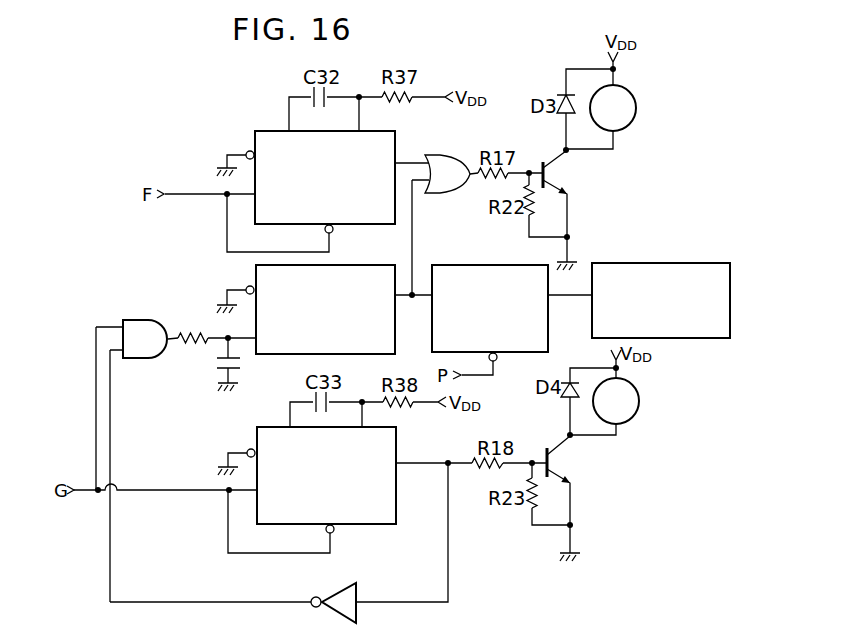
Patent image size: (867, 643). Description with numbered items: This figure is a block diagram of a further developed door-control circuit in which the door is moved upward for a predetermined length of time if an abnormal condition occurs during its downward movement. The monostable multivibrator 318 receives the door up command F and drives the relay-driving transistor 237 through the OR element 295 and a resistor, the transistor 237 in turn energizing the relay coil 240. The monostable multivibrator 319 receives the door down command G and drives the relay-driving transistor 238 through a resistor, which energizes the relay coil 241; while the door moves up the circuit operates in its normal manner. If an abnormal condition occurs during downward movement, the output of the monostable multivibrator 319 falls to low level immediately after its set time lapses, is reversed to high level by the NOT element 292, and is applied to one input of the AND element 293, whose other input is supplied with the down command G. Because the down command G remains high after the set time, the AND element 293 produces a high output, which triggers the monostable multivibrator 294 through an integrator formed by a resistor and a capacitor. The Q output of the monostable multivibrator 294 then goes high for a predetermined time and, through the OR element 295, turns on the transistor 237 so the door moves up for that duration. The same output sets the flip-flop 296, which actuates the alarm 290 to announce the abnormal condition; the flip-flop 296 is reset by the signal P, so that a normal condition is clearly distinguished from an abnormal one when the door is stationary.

The monostable multivibrator 318 is at (270, 131).
The monostable multivibrator 294 is at (340, 266).
The monostable multivibrator 319 is at (358, 525).
The AND element 293 is at (157, 318).
The OR element 295 is at (460, 147).
The flip-flop 296 is at (495, 265).
The alarm 290 is at (670, 263).
The NOT element 292 is at (358, 590).
The relay-driving transistor 237 is at (560, 172).
The relay-driving transistor 238 is at (565, 458).
The relay coil 240 is at (636, 113).
The relay coil 241 is at (640, 398).